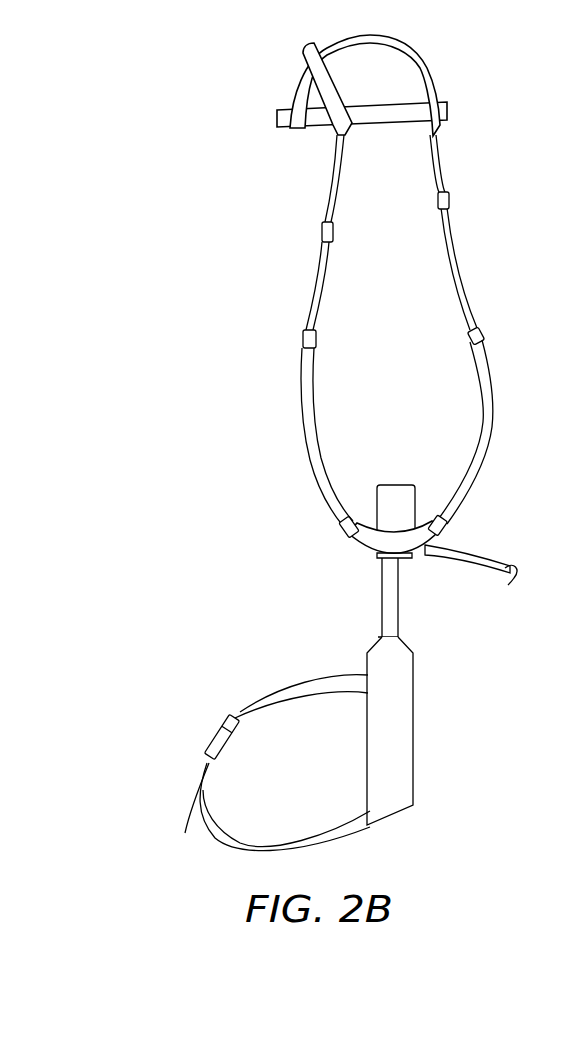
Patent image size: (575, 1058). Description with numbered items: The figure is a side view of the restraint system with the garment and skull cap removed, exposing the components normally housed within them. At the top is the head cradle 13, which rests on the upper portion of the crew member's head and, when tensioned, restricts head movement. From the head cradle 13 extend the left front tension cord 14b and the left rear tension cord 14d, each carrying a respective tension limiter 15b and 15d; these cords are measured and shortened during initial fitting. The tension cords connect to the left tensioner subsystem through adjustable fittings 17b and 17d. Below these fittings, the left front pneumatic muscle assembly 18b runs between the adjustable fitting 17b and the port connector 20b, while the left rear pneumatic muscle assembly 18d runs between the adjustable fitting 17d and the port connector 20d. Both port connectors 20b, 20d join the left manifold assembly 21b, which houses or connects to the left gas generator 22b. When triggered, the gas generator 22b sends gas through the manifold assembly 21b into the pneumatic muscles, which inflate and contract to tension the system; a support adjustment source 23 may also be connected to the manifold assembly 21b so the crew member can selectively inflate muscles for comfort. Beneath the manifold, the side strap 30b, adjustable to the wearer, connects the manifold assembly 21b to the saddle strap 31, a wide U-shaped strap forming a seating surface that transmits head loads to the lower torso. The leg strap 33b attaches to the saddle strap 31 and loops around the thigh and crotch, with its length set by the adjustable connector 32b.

The head cradle 13 is at (293, 100).
The left front tension cord 14b is at (335, 182).
The left rear tension cord 14d is at (432, 158).
The tension limiter 15b is at (323, 231).
The tension limiter 15d is at (448, 198).
The adjustable fitting 17b is at (305, 338).
The adjustable fitting 17d is at (473, 328).
The left front pneumatic muscle assembly 18b is at (307, 395).
The left rear pneumatic muscle assembly 18d is at (483, 392).
The port connector 20b is at (335, 521).
The port connector 20d is at (457, 525).
The left manifold assembly 21b is at (373, 537).
The left gas generator 22b is at (395, 510).
The support adjustment source 23 is at (463, 570).
The side strap 30b is at (390, 613).
The saddle strap 31 is at (392, 737).
The adjustable connector 32b is at (222, 733).
The leg strap 33b is at (320, 835).